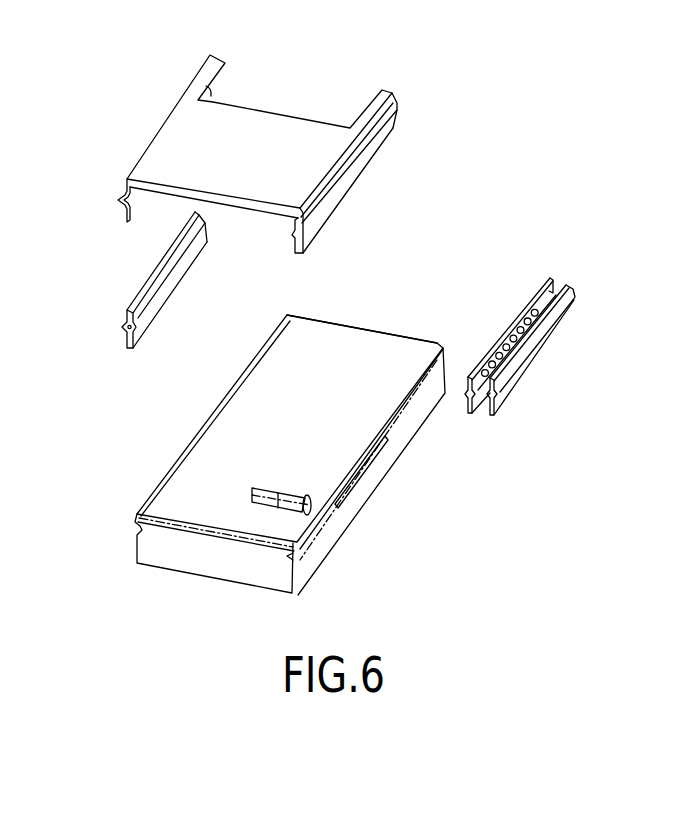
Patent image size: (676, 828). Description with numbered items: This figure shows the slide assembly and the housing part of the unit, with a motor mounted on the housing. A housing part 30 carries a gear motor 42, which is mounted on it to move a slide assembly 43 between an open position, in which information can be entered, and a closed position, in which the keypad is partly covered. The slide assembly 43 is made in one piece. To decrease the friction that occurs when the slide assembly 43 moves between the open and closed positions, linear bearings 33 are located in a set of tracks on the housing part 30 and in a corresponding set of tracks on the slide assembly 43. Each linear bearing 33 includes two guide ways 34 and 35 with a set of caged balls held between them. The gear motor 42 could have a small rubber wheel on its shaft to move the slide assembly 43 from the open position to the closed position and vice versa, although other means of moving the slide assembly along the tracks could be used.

The housing part 30 is at (163, 473).
The linear bearing 33 is at (130, 310).
The guide way 34 is at (512, 317).
The guide way 35 is at (570, 283).
The gear motor 42 is at (305, 513).
The slide assembly 43 is at (337, 203).